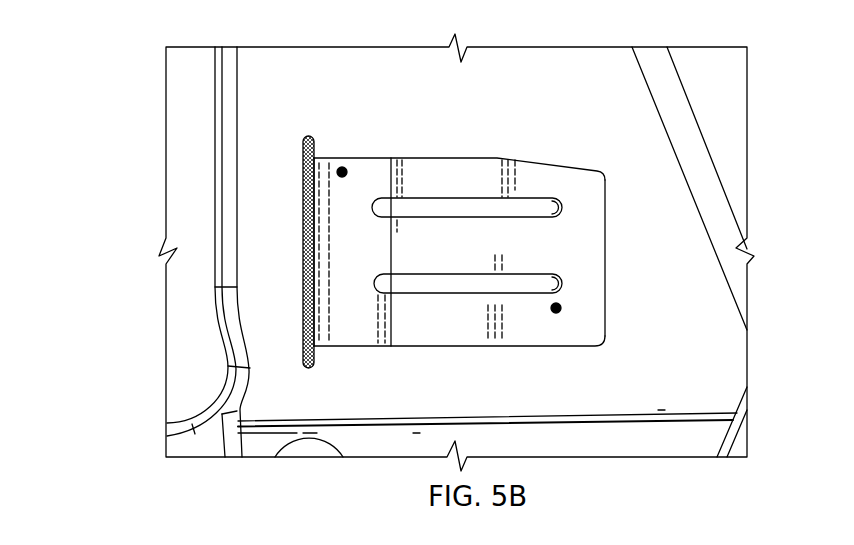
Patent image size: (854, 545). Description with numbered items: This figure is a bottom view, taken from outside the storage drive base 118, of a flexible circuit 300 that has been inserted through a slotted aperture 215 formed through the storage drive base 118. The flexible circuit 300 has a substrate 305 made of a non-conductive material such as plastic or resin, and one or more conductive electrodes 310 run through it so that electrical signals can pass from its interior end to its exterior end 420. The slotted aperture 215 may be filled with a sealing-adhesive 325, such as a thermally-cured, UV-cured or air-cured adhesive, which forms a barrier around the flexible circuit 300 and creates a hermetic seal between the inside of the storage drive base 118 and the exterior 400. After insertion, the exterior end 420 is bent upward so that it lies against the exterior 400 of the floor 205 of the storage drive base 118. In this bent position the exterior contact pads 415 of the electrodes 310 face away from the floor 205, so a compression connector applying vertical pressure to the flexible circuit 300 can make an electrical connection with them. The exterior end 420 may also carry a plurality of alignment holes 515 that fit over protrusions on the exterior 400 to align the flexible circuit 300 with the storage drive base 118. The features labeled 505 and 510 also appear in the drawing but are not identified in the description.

The storage drive base 118 is at (254, 351).
The floor 205 is at (305, 458).
The slotted aperture 215 is at (299, 136).
The flexible circuit 300 is at (534, 160).
The substrate 305 is at (606, 237).
The conductive electrodes 310 is at (406, 288).
The sealing-adhesive 325 is at (302, 247).
The exterior 400 is at (389, 405).
The exterior contact pads 415 is at (568, 210).
The exterior end 420 is at (612, 330).
The lower mounting region 505 is at (542, 317).
The fastener 510 is at (347, 176).
The alignment holes 515 is at (358, 163).